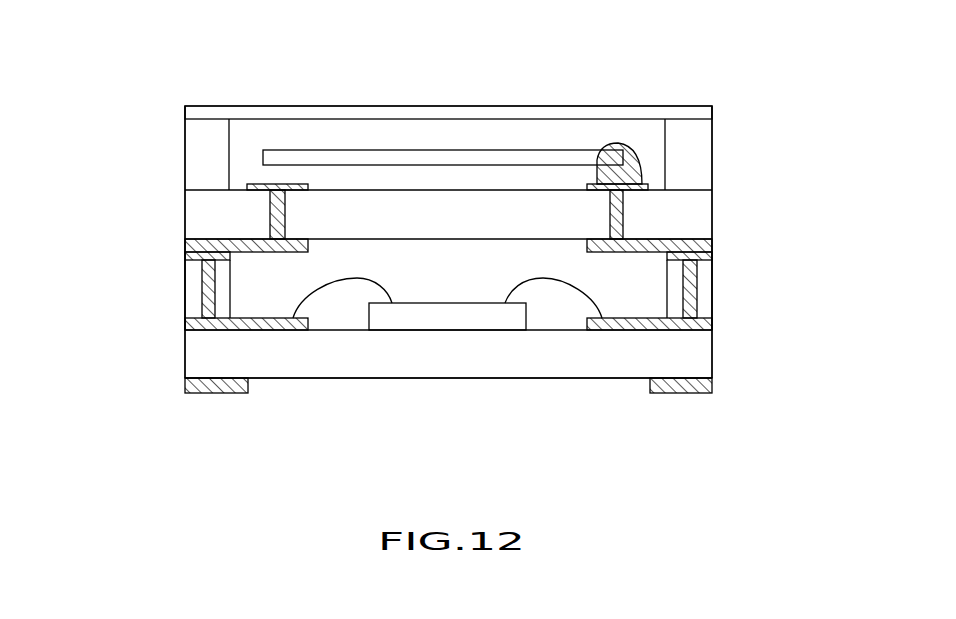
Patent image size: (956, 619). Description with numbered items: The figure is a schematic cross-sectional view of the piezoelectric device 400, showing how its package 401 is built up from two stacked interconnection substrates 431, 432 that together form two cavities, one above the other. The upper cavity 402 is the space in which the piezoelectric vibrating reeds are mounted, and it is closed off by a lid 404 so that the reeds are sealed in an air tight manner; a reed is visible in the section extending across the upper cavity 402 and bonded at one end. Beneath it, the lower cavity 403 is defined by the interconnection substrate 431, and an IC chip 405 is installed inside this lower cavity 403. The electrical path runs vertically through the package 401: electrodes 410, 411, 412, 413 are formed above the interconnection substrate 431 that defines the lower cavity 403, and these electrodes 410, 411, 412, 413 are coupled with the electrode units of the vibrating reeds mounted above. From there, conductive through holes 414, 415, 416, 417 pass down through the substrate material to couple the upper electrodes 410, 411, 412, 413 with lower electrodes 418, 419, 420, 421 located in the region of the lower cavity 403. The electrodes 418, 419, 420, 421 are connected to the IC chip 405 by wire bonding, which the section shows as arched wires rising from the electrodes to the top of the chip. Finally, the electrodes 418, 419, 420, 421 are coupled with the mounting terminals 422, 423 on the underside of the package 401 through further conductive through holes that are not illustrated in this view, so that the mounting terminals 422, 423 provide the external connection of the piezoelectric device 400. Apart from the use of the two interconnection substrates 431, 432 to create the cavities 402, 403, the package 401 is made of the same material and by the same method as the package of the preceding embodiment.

The piezoelectric device 400 is at (762, 41).
The package 401 is at (163, 106).
The upper cavity 402 is at (713, 146).
The lower cavity 403 is at (713, 272).
The lid 404 is at (632, 108).
The IC chip 405 is at (452, 318).
The electrode 410 is at (377, 279).
The electrode 411 is at (187, 260).
The electrode 412 is at (509, 220).
The electrode 413 is at (713, 252).
The through hole 414 is at (128, 301).
The through hole 415 is at (205, 300).
The through hole 416 is at (758, 289).
The through hole 417 is at (690, 300).
The electrode 418 is at (273, 368).
The electrode 419 is at (288, 320).
The electrode 420 is at (710, 336).
The electrode 421 is at (712, 322).
The mounting terminal 422 is at (217, 393).
The mounting terminal 423 is at (683, 393).
The interconnection substrate 431 is at (550, 362).
The interconnection substrate 432 is at (448, 223).